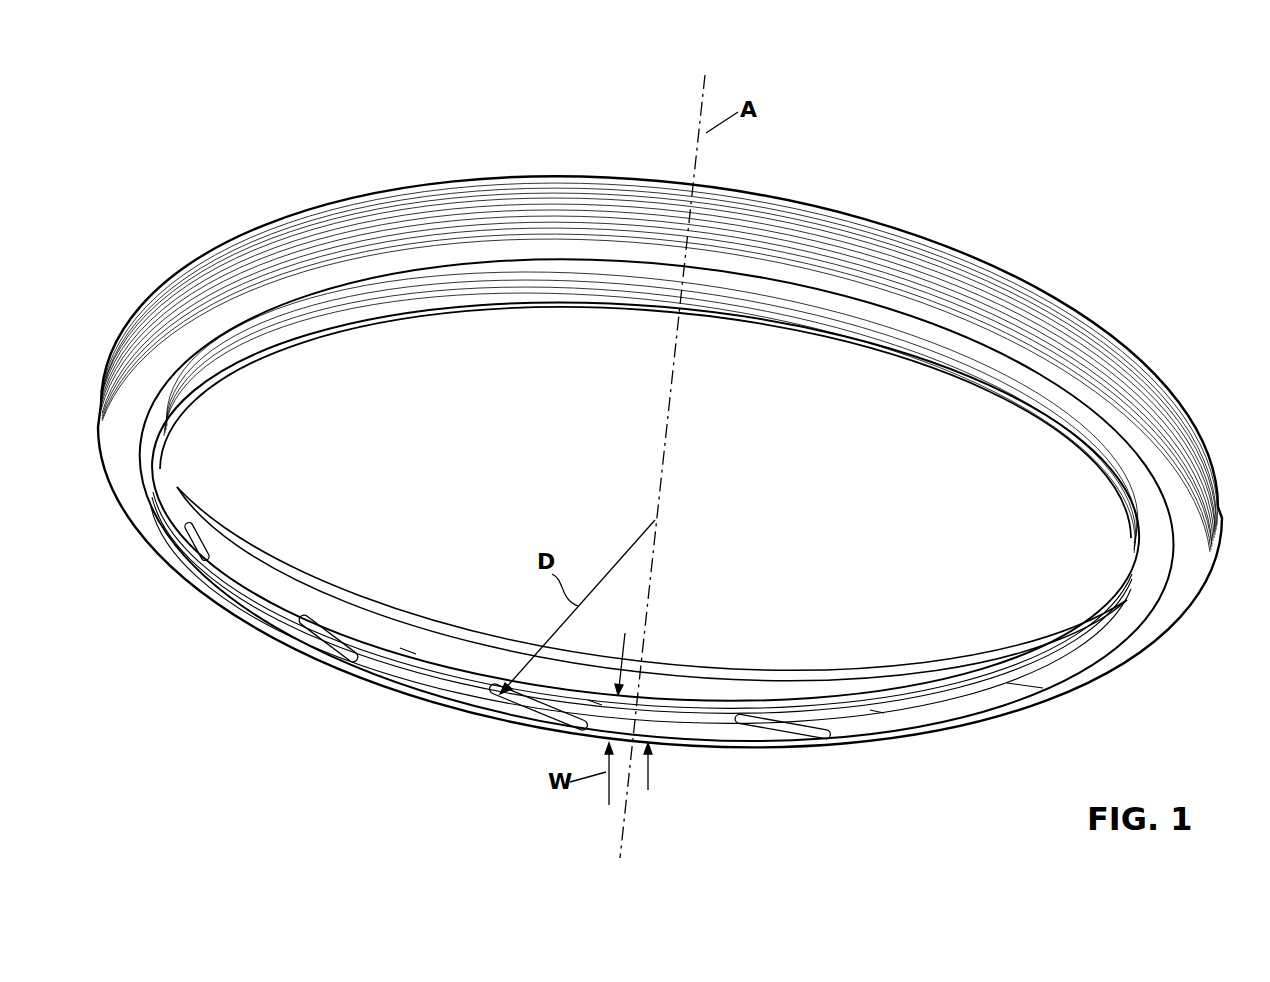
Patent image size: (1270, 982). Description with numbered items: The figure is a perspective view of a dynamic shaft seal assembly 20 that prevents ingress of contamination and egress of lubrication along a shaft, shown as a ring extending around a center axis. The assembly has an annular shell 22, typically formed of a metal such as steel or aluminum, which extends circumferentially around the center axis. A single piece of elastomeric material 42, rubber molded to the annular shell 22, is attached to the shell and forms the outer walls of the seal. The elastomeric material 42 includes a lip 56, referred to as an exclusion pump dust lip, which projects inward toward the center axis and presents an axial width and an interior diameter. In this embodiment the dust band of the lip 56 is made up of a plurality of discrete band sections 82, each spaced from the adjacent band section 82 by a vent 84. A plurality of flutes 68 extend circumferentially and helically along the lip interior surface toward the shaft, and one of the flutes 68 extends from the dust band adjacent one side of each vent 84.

The shaft seal assembly 20 is at (1025, 166).
The annular shell 22 is at (355, 625).
The elastomeric material 42 is at (1213, 528).
The lip 56 is at (648, 762).
The flutes 68 is at (178, 532).
The band sections 82 is at (408, 650).
The vent 84 is at (300, 612).